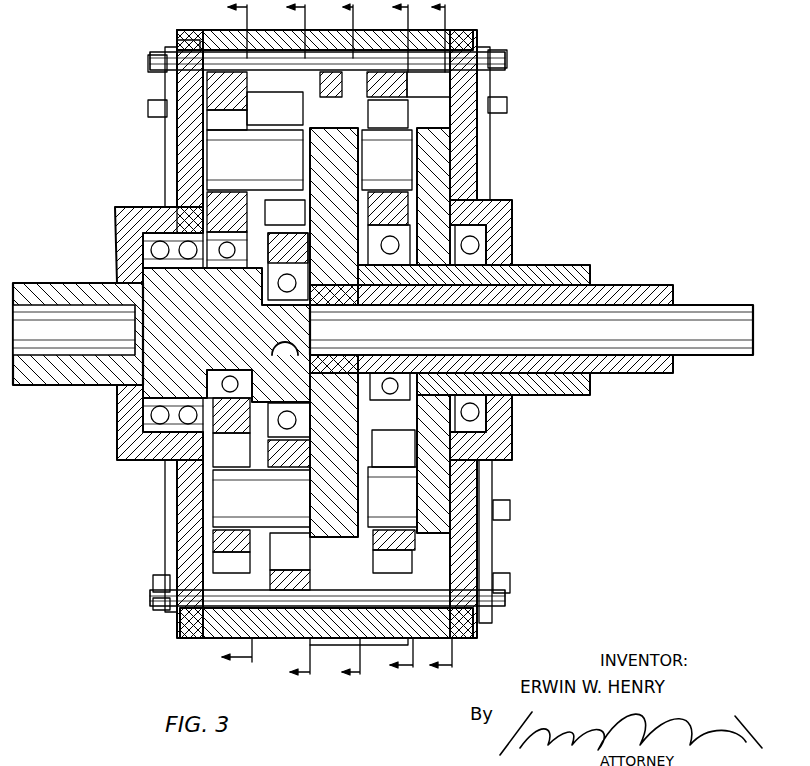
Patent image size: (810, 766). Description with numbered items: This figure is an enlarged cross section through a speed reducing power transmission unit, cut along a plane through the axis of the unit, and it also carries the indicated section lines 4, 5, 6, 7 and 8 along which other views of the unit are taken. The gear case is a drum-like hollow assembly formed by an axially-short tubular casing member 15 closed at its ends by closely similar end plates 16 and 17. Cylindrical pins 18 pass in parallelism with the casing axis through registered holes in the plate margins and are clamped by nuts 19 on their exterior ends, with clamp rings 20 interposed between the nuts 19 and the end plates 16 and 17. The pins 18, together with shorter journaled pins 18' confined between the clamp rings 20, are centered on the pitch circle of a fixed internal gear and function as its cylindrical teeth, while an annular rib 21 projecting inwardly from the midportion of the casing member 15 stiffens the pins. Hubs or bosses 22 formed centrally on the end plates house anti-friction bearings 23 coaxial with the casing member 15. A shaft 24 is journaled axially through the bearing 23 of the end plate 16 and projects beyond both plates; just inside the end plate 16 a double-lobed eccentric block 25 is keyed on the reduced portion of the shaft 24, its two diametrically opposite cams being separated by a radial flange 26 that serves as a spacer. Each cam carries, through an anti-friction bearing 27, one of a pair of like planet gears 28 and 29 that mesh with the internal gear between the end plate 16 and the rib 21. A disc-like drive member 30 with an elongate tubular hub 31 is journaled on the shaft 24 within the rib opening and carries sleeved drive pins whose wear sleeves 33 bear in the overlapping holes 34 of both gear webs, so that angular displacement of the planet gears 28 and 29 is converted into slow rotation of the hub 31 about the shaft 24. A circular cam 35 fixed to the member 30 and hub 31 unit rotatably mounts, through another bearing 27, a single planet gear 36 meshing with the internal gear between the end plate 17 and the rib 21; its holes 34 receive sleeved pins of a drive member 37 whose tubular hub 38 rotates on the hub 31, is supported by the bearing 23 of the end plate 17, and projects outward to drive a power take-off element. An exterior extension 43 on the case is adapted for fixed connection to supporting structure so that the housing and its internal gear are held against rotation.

The section line 4— 4 is at (224, 334).
The section line 5— 5 is at (289, 348).
The section line 6— 6 is at (341, 348).
The section line 7— 7 is at (396, 348).
The section line 8— 8 is at (438, 348).
The tubular casing member 15 is at (358, 40).
The end plate 16 is at (192, 160).
The end plate 17 is at (470, 165).
The cylindrical pins 18 is at (333, 322).
The shorter pins 18' is at (155, 607).
The nuts 19 is at (160, 55).
The clamp rings 20 is at (170, 139).
The annular rib 21 is at (342, 87).
The hubs or bosses 22 is at (120, 210).
The anti-friction bearings 23 is at (472, 246).
The shaft 24 is at (48, 290).
The double-lobed eccentric block 25 is at (195, 230).
The radial flange 26 is at (170, 468).
The anti-friction bearing 27 is at (213, 233).
The planet gear 28 is at (222, 58).
The planet gear 29 is at (275, 108).
The drive member 30 is at (310, 490).
The tubular hub 31 is at (635, 285).
The wear sleeve 33 is at (312, 328).
The holes 34 is at (311, 331).
The circular cam 35 is at (520, 268).
The planet gear 36 is at (408, 86).
The drive member 37 is at (500, 100).
The tubular hub 38 is at (575, 395).
The exterior extension 43 is at (268, 662).